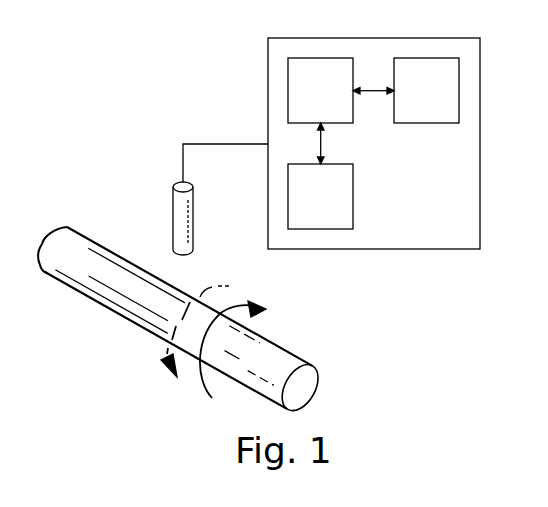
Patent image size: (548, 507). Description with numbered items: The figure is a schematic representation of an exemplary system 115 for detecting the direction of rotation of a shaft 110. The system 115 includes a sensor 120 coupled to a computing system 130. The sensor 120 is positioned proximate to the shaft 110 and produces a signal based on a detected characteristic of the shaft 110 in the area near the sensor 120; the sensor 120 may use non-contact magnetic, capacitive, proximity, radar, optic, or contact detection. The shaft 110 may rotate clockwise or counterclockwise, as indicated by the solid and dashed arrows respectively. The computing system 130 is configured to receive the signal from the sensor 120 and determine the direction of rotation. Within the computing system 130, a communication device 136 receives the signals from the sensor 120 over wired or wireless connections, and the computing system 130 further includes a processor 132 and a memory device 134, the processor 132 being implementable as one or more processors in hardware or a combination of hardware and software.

The shaft 110 is at (97, 304).
The system for detecting direction of rotation 115 is at (190, 63).
The sensor 120 is at (172, 219).
The computing system 130 is at (447, 209).
The processor 132 is at (341, 105).
The memory device 134 is at (447, 105).
The communication device 136 is at (341, 211).